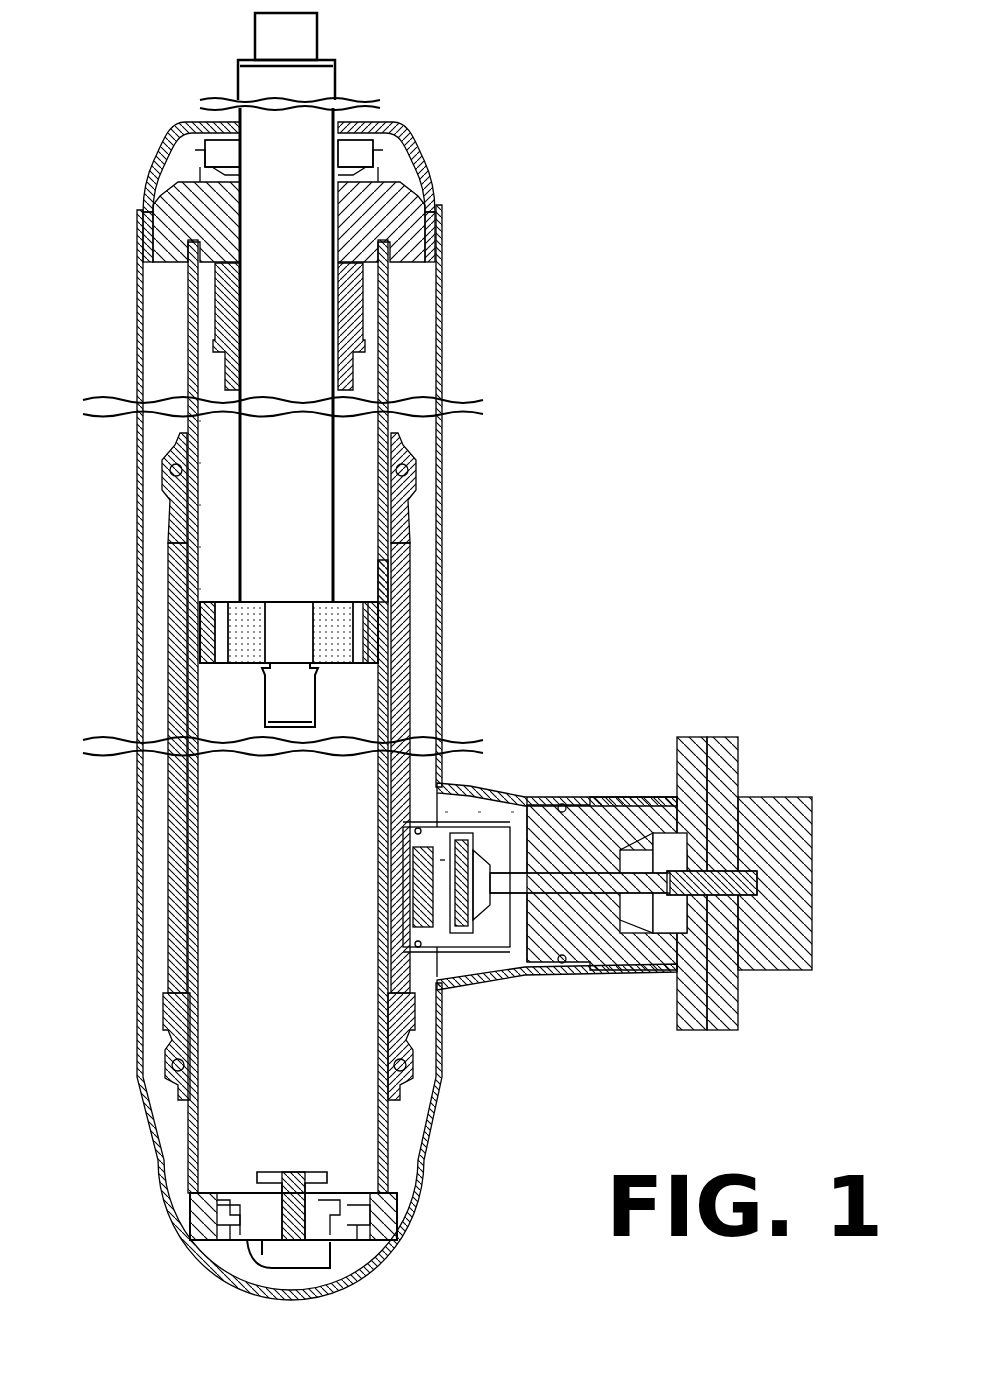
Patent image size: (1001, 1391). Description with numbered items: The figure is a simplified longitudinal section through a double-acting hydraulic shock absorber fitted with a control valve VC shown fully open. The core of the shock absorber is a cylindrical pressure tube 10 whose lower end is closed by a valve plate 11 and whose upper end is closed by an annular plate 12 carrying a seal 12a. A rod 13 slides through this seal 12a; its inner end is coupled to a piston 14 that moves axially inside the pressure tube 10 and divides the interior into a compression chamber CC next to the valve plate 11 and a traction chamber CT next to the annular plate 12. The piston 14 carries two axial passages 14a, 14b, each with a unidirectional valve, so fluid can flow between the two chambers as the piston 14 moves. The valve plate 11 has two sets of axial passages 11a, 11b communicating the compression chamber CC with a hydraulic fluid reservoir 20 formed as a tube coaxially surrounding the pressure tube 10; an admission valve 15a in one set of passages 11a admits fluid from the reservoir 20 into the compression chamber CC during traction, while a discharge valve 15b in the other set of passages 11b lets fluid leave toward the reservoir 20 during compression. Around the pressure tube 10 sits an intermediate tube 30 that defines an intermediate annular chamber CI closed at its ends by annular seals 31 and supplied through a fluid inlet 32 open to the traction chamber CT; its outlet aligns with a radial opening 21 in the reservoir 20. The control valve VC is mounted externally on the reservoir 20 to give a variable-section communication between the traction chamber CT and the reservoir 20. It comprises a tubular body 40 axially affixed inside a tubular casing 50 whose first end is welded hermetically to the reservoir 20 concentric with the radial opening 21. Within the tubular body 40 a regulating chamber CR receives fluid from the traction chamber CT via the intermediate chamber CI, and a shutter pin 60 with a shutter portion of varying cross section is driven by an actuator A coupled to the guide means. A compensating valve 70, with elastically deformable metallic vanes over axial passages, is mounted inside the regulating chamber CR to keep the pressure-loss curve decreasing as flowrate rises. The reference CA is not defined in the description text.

The pressure tube 10 is at (392, 328).
The annular plate 12 is at (390, 212).
The seal 12a is at (373, 170).
The rod 13 is at (288, 366).
The piston 14 is at (220, 646).
The axial passage of the piston 14a is at (220, 620).
The axial passage of the piston 14b is at (360, 643).
The hydraulic fluid reservoir 20 is at (420, 577).
The radial opening 21 is at (440, 810).
The intermediate tube 30 is at (420, 618).
The annular seals 31 is at (419, 468).
The fluid inlet 32 is at (376, 585).
The tubular body 40 is at (610, 835).
The tubular casing 50 is at (522, 988).
The shutter pin 60 is at (630, 895).
The compensating valve 70 is at (405, 920).
The actuator A is at (730, 882).
The annular chamber CA is at (482, 808).
The compression chamber CC is at (292, 935).
The intermediate annular chamber CI is at (188, 843).
The regulating chamber CR is at (462, 865).
The traction chamber CT is at (217, 466).
The control valve VC is at (600, 788).
The valve plate 11 is at (293, 1190).
The axial passages of the valve plate 11a is at (210, 1230).
The axial passages of the valve plate 11b is at (323, 1210).
The admission valve 15a is at (229, 1207).
The discharge valve 15b is at (243, 1240).